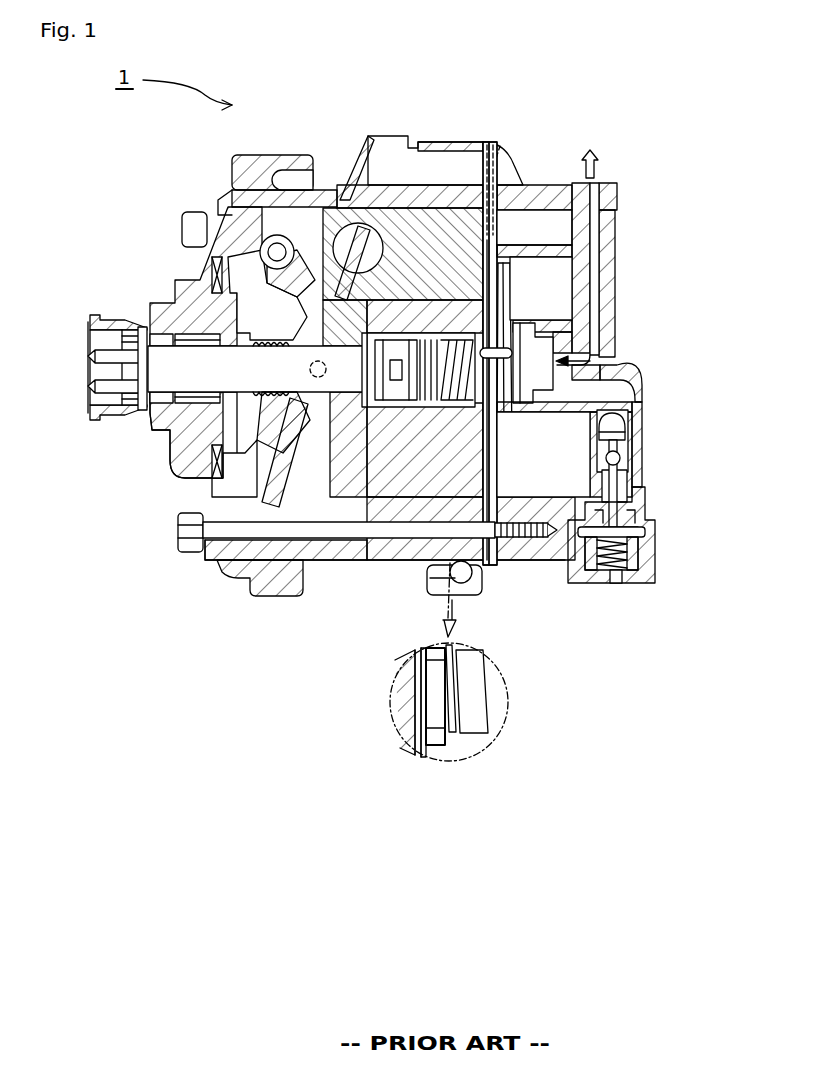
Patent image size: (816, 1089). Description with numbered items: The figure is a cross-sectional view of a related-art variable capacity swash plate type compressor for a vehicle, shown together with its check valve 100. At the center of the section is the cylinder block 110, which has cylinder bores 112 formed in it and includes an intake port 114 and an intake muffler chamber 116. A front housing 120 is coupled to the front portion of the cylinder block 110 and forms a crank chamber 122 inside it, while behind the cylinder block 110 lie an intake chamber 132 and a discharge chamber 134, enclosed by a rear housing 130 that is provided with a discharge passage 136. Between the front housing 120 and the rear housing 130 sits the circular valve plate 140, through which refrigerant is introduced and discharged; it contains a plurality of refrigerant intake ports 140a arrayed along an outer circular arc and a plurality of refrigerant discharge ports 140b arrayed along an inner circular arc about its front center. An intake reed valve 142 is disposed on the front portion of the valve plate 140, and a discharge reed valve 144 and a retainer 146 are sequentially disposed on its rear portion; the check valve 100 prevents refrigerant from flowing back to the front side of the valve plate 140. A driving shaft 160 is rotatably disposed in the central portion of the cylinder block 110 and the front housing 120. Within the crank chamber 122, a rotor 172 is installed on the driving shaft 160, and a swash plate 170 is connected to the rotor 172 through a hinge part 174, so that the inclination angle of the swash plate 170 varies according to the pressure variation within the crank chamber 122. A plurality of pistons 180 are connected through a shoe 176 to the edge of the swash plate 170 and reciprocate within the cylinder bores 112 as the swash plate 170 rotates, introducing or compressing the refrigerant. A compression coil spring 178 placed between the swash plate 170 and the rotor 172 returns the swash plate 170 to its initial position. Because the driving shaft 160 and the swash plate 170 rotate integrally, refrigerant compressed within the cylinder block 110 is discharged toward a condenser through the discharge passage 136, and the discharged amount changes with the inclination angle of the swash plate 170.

The check valve 100 is at (640, 381).
The cylinder block 110 is at (382, 553).
The cylinder bores 112 is at (370, 216).
The intake port 114 is at (378, 200).
The intake muffler chamber 116 is at (428, 163).
The front housing 120 is at (235, 562).
The crank chamber 122 is at (316, 495).
The rear housing 130 is at (560, 520).
The intake chamber 132 is at (556, 241).
The discharge chamber 134 is at (566, 453).
The discharge passage 136 is at (590, 305).
The valve plate 140 is at (490, 560).
The refrigerant intake ports 140a is at (500, 245).
The refrigerant discharge ports 140b is at (515, 265).
The intake reed valve 142 is at (486, 225).
The discharge reed valve 144 is at (506, 275).
The retainer 146 is at (515, 300).
The driving shaft 160 is at (107, 387).
The swash plate 170 is at (287, 503).
The rotor 172 is at (200, 300).
The hinge part 174 is at (250, 240).
The shoe 176 is at (320, 233).
The compression coil spring 178 is at (167, 428).
The pistons 180 is at (358, 224).